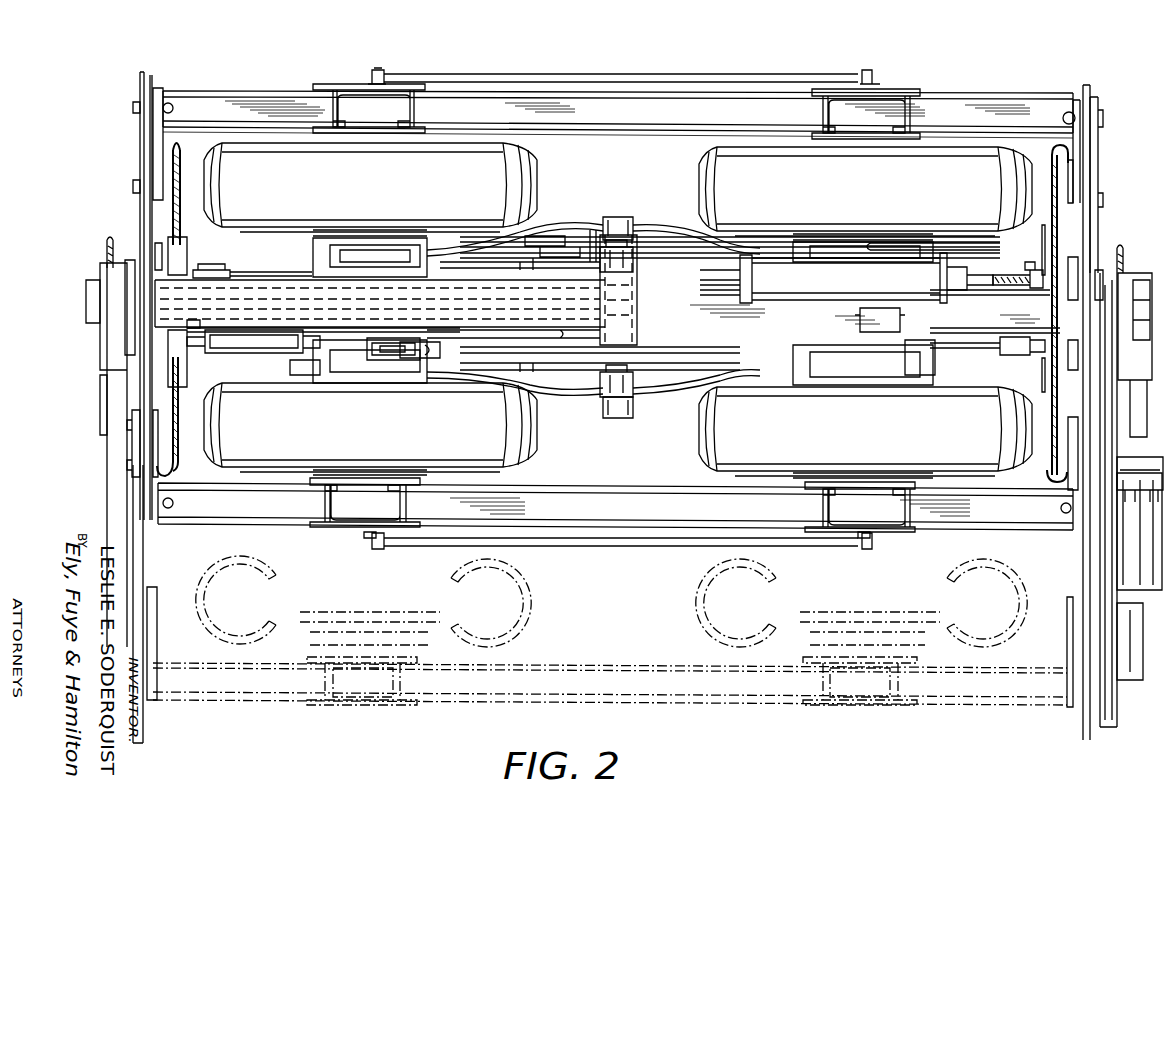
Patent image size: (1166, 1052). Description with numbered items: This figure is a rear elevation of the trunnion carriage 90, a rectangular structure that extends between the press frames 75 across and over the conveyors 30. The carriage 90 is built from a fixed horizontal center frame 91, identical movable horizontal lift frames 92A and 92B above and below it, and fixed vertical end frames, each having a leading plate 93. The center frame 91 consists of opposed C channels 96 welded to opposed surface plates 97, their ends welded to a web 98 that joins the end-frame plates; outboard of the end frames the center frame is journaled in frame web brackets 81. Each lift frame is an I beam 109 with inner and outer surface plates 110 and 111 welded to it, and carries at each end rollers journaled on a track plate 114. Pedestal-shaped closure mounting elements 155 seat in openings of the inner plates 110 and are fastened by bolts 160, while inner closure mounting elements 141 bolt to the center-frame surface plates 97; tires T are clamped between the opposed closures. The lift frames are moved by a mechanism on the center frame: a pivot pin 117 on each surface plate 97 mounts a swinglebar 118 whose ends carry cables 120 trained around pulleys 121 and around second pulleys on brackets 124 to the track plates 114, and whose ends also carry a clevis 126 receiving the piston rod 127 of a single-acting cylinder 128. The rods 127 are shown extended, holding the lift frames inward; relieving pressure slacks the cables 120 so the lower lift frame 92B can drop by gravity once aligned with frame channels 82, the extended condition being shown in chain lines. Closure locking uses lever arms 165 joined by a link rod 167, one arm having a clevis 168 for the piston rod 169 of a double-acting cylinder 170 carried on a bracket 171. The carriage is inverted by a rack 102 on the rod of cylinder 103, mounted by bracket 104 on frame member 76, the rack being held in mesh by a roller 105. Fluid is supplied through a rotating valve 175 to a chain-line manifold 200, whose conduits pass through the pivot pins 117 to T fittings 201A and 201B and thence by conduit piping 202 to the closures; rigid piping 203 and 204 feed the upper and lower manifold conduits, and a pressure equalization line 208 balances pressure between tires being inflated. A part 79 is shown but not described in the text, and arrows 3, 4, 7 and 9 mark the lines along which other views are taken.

The conveyors 30 is at (257, 59).
The trunnion carriage 90 is at (1003, 74).
The lift frame 92A is at (618, 114).
The lift frame 92B is at (672, 725).
The leading plate 93 is at (142, 142).
The I beam length 109 is at (188, 73).
The inner surface plate 110 is at (320, 114).
The outer surface plate 111 is at (338, 87).
The bolts 160 is at (412, 116).
The closure mounting element 155 is at (848, 150).
The pressure equalization line 208 is at (500, 77).
The tire T is at (540, 164).
The C channels 96 is at (277, 282).
The surface plates 97 is at (160, 358).
The web 98 is at (147, 292).
The frames 75 is at (92, 428).
The frame member 76 is at (107, 490).
The threaded rod 79 is at (107, 242).
The frame web bracket 81 is at (100, 340).
The frame channels 82 is at (147, 560).
The rack 102 is at (1132, 324).
The double acting pneumatic cylinder 103 is at (1132, 567).
The bracket 104 is at (1140, 650).
The roller 105 is at (1108, 260).
The track plate 114 is at (160, 477).
The pivot pin 117 is at (627, 254).
The swinglebar 118 is at (540, 255).
The actuating cables 120 is at (262, 255).
The pulley 121 is at (235, 252).
The bracket 124 is at (1028, 272).
The clevis 126 is at (593, 262).
The piston rod 127 is at (757, 273).
The single-acting pneumatic cylinder 128 is at (813, 290).
The closure mounting element 141 is at (920, 347).
The lever arm 165 is at (378, 362).
The link rod 167 is at (533, 263).
The clevis 168 is at (363, 363).
The piston rod 169 is at (295, 400).
The double-acting pneumatic cylinder 170 is at (260, 354).
The bracket 171 is at (203, 348).
The rotating valve 175 is at (85, 318).
The manifold 200 is at (639, 290).
The center frame 91 is at (710, 300).
The T fitting 201A is at (617, 217).
The T fitting 201B is at (622, 410).
The conduit piping 202 is at (591, 218).
The rigid piping 203 is at (457, 278).
The rigid piping 204 is at (432, 332).
The section line 3 is at (100, 229).
The section line 4 is at (672, 38).
The section line 7 is at (1025, 305).
The section line 9 is at (64, 262).